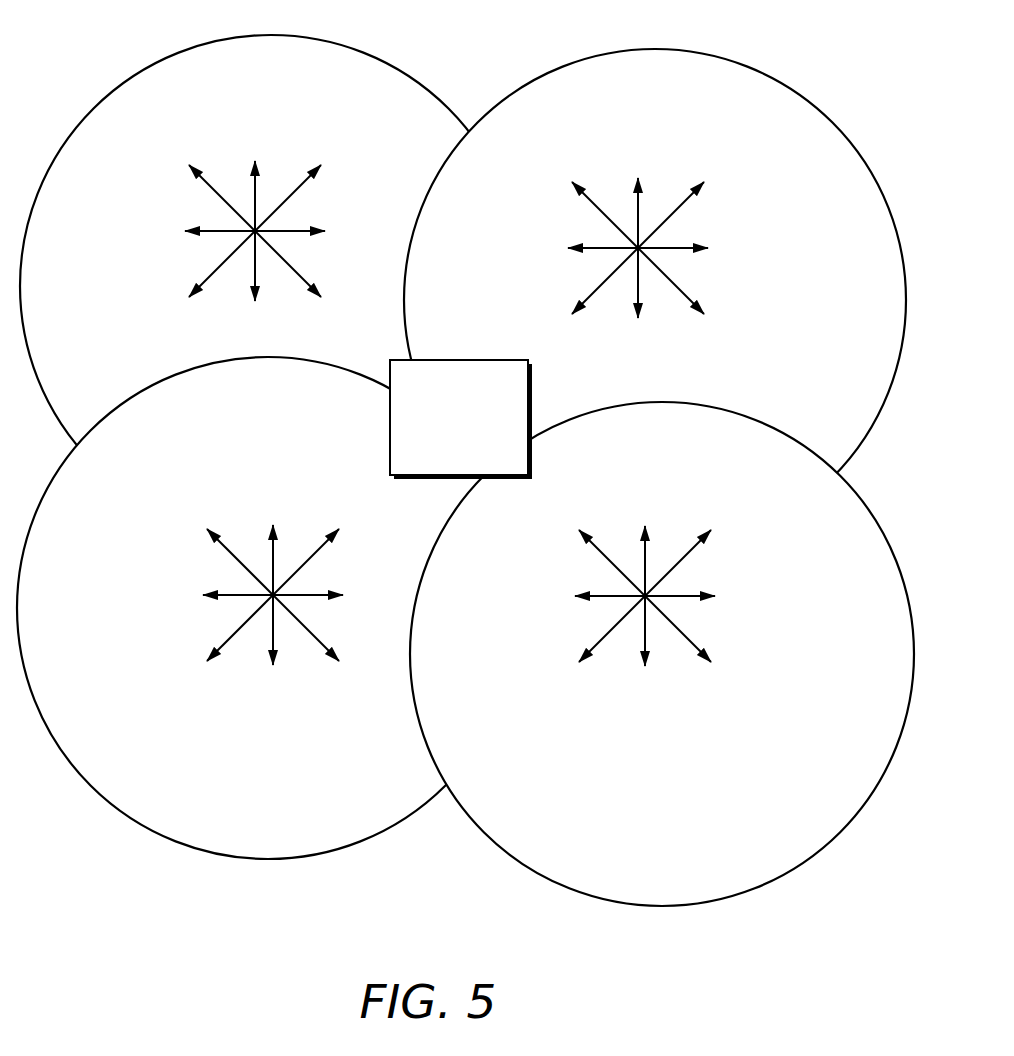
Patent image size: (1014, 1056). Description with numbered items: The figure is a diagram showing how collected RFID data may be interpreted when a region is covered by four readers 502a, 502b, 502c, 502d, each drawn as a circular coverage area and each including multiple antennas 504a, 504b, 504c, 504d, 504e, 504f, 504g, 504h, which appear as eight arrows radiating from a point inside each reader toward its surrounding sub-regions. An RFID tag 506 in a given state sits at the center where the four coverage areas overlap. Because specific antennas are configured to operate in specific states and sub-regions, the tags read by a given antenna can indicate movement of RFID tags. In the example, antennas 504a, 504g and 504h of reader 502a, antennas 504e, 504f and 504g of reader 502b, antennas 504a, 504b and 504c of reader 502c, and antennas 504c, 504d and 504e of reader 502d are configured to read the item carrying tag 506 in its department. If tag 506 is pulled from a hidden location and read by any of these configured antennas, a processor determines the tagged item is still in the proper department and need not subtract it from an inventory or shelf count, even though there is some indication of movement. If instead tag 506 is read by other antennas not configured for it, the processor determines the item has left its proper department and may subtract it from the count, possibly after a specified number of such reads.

The reader 502a is at (271, 286).
The reader 502b is at (655, 300).
The reader 502c is at (268, 608).
The reader 502d is at (662, 654).
The antenna 504a is at (519, 413).
The antenna 504b is at (507, 365).
The antenna 504c is at (451, 364).
The antenna 504d is at (394, 366).
The antenna 504e is at (381, 413).
The antenna 504f is at (396, 461).
The antenna 504g is at (451, 463).
The antenna 504h is at (507, 461).
The RFID tag 506 is at (461, 419).